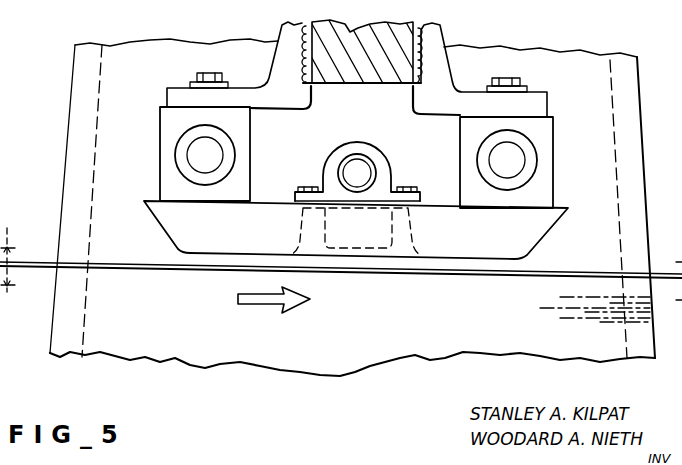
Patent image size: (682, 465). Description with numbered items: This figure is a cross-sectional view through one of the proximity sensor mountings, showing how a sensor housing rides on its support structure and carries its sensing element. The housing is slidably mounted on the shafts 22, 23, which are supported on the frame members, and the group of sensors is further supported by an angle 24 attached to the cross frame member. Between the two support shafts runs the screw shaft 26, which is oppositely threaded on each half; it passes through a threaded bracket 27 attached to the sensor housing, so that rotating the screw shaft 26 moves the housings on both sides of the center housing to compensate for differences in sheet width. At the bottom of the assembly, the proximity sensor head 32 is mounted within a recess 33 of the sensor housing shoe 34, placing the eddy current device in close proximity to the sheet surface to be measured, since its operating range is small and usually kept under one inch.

The shaft 22 is at (513, 160).
The shaft 23 is at (196, 149).
The angle 24 is at (280, 57).
The screw shaft 26 is at (352, 166).
The threaded bracket 27 is at (380, 157).
The proximity sensor head 32 is at (358, 236).
The recess 33 is at (416, 232).
The sensor housing shoe 34 is at (499, 243).